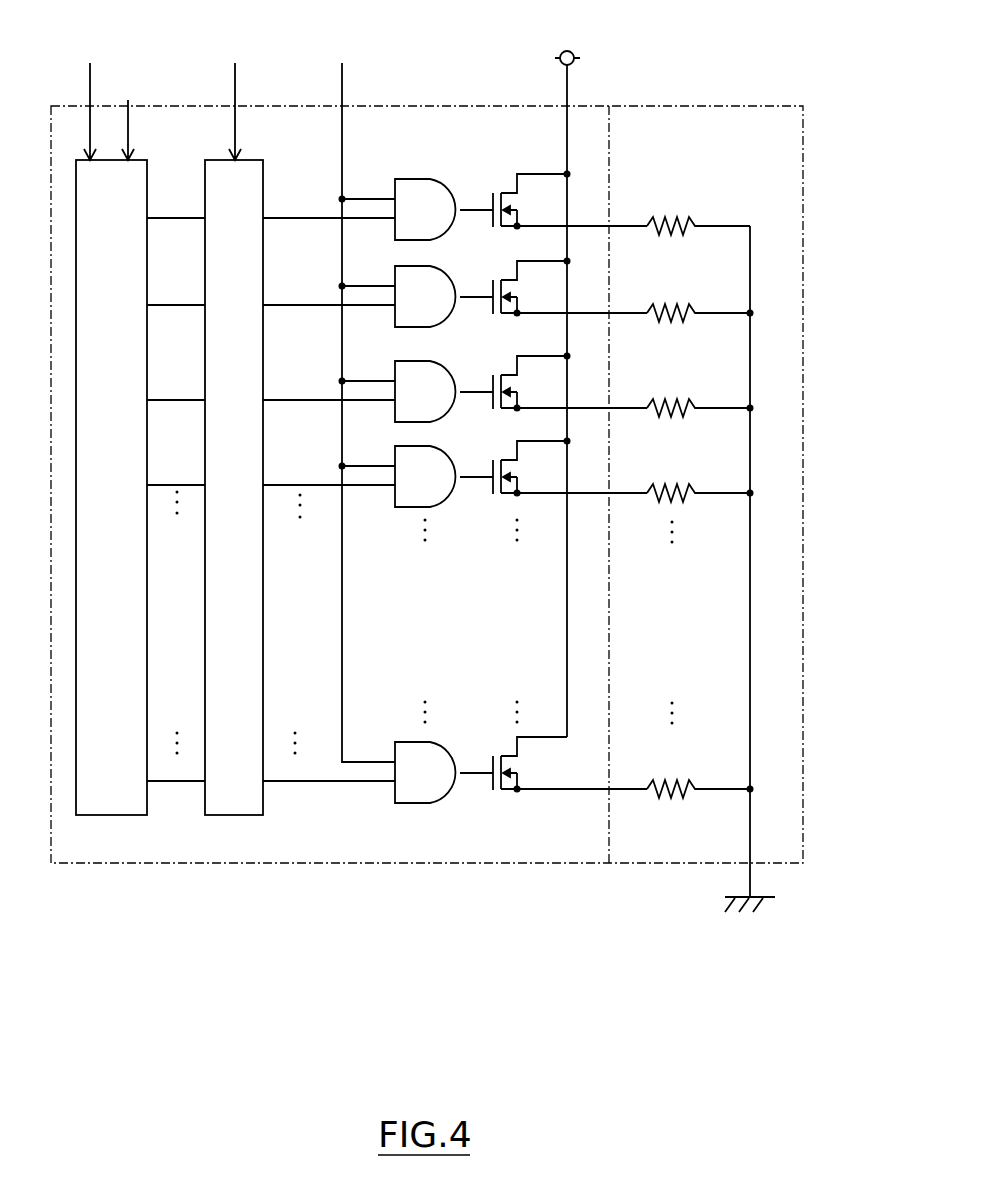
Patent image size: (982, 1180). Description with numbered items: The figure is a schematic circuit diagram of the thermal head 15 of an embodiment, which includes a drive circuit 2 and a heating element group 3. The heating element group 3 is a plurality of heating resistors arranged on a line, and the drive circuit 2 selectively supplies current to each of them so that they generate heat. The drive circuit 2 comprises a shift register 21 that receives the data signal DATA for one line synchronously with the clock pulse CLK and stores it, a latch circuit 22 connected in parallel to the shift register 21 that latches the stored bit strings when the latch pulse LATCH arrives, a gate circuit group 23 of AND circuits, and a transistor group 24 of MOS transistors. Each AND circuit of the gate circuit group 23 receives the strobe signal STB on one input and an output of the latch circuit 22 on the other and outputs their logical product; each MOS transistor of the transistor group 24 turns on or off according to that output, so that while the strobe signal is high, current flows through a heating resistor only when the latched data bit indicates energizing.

The drive circuit 2 is at (318, 863).
The heating element group 3 is at (660, 863).
The thermal head 15 is at (468, 987).
The shift register 21 is at (110, 815).
The latch circuit 22 is at (235, 815).
The gate circuit group 23 is at (425, 829).
The transistor group 24 is at (537, 829).